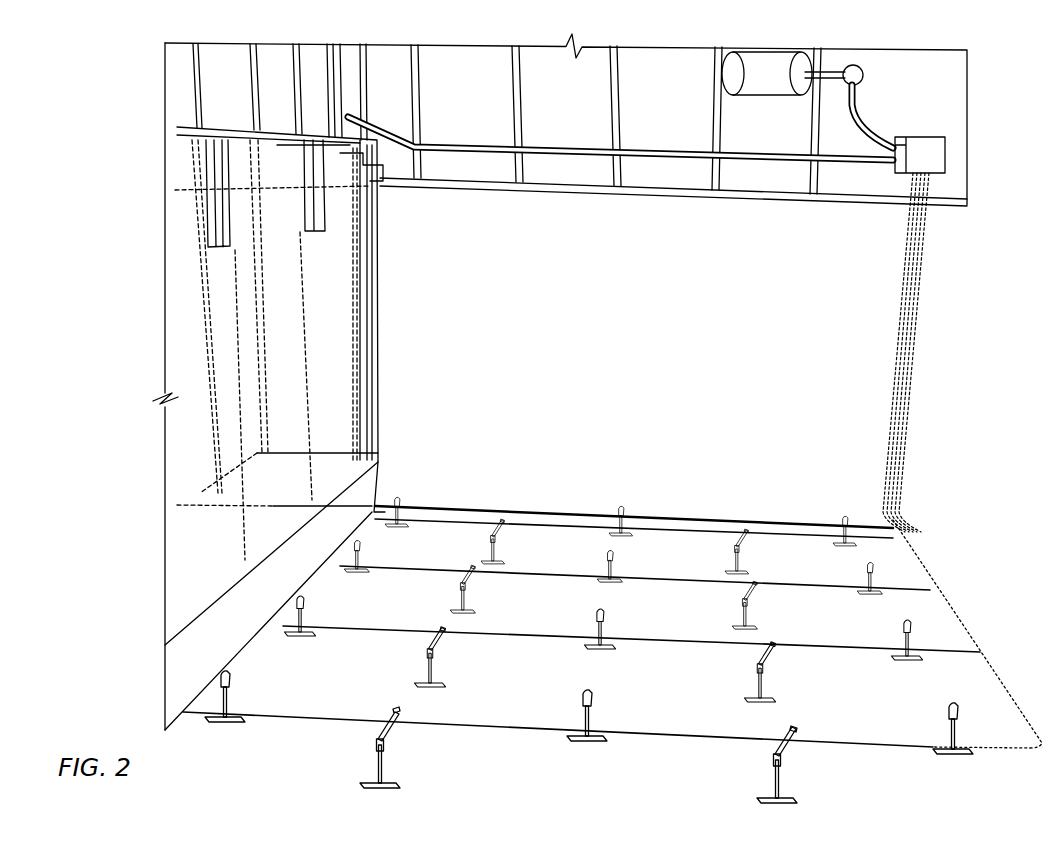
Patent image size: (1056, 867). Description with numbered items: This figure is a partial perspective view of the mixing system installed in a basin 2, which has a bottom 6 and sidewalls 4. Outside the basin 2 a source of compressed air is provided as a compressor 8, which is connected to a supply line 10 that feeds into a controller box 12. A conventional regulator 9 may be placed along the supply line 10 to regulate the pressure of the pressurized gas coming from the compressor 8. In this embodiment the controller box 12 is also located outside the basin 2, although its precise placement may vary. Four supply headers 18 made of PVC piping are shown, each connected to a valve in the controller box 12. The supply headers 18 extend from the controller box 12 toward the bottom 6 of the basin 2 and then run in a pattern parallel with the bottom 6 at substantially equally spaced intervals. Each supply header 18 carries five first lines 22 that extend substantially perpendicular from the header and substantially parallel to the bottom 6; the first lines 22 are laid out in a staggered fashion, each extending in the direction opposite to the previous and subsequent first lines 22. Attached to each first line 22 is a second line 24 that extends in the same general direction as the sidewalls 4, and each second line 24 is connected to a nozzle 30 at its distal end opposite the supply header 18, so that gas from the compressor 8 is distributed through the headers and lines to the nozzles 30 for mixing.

The basin 2 is at (463, 165).
The sidewalls 4 is at (438, 366).
The bottom 6 is at (842, 707).
The compressor 8 is at (772, 86).
The regulator 9 is at (849, 86).
The supply line 10 is at (862, 127).
The controller box 12 is at (922, 137).
The supply headers 18 is at (898, 257).
The first lines 22 is at (402, 732).
The second line 24 is at (373, 765).
The nozzle 30 is at (406, 787).